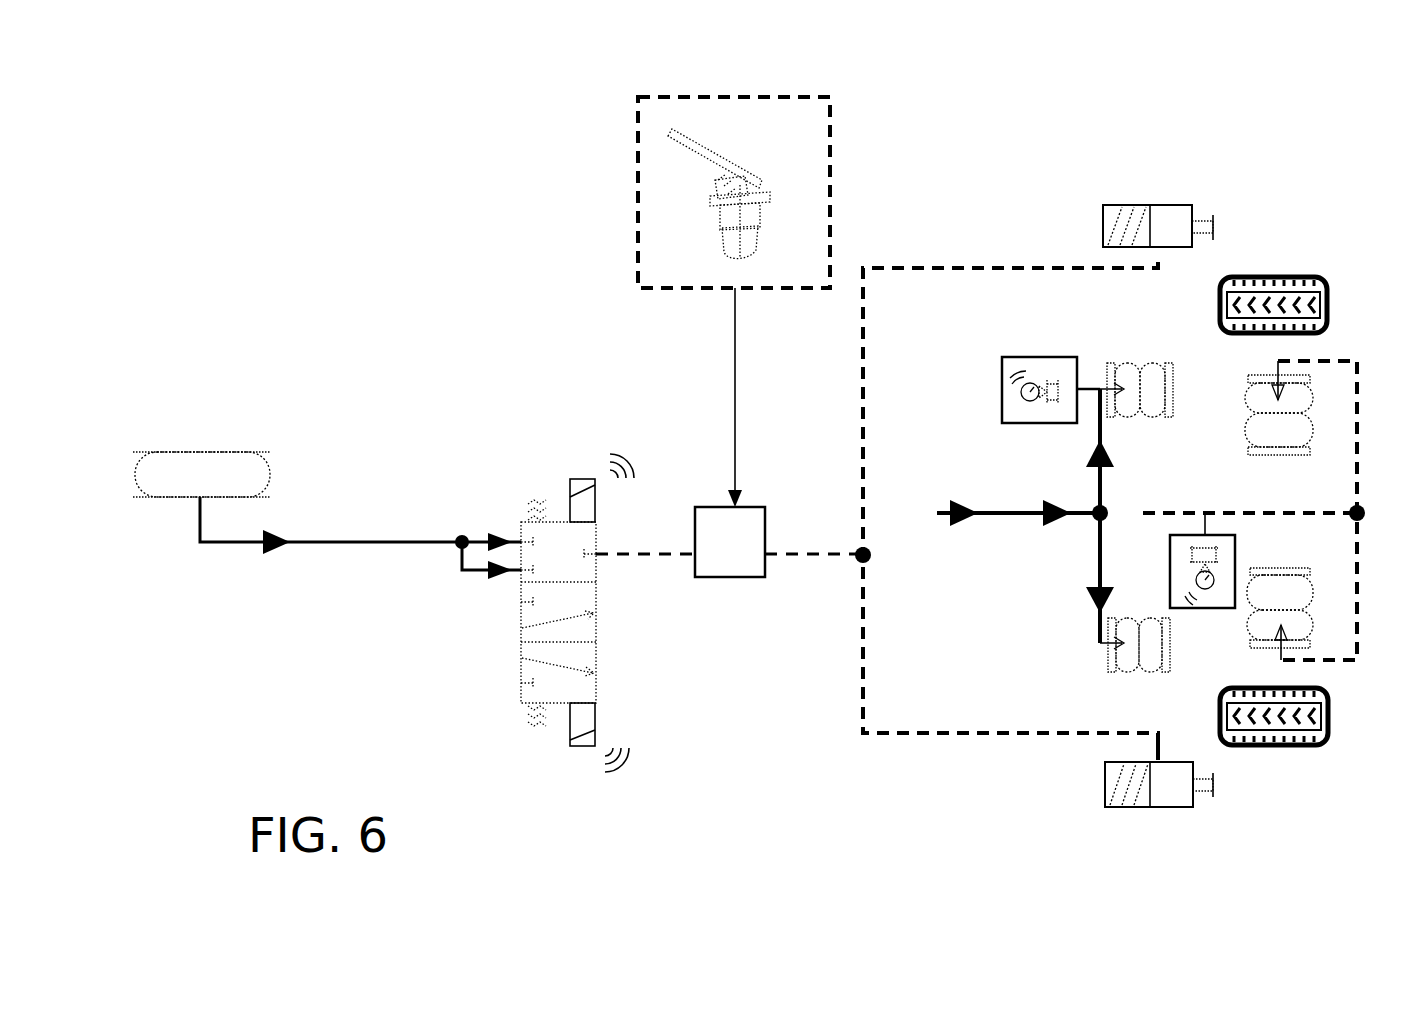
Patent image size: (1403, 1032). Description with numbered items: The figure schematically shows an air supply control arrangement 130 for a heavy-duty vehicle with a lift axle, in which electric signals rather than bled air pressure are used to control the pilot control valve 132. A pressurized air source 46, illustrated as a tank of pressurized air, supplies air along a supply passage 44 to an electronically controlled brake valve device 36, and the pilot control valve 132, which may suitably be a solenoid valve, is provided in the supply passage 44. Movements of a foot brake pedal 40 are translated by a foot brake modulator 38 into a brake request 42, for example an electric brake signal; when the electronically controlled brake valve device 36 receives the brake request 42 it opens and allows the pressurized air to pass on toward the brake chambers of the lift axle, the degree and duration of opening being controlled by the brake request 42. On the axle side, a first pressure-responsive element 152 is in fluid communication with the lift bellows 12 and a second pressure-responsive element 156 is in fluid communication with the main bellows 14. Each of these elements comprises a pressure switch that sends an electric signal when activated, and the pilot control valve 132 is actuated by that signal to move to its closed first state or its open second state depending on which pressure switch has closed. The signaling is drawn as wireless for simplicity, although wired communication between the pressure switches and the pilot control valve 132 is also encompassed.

The air supply control arrangement 130 is at (362, 208).
The foot brake pedal 40 is at (710, 150).
The foot brake modulator 38 is at (756, 242).
The brake request 42 is at (735, 310).
The pressurized air source 46 is at (198, 450).
The supply passage 44 is at (378, 540).
The pilot control valve 132 is at (521, 643).
The electronically controlled brake valve device 36 is at (750, 567).
The first pressure-responsive element 152 is at (1024, 357).
The second pressure-responsive element 156 is at (1208, 608).
The lift bellows 12 is at (1152, 363).
The main bellows 14 is at (1258, 430).